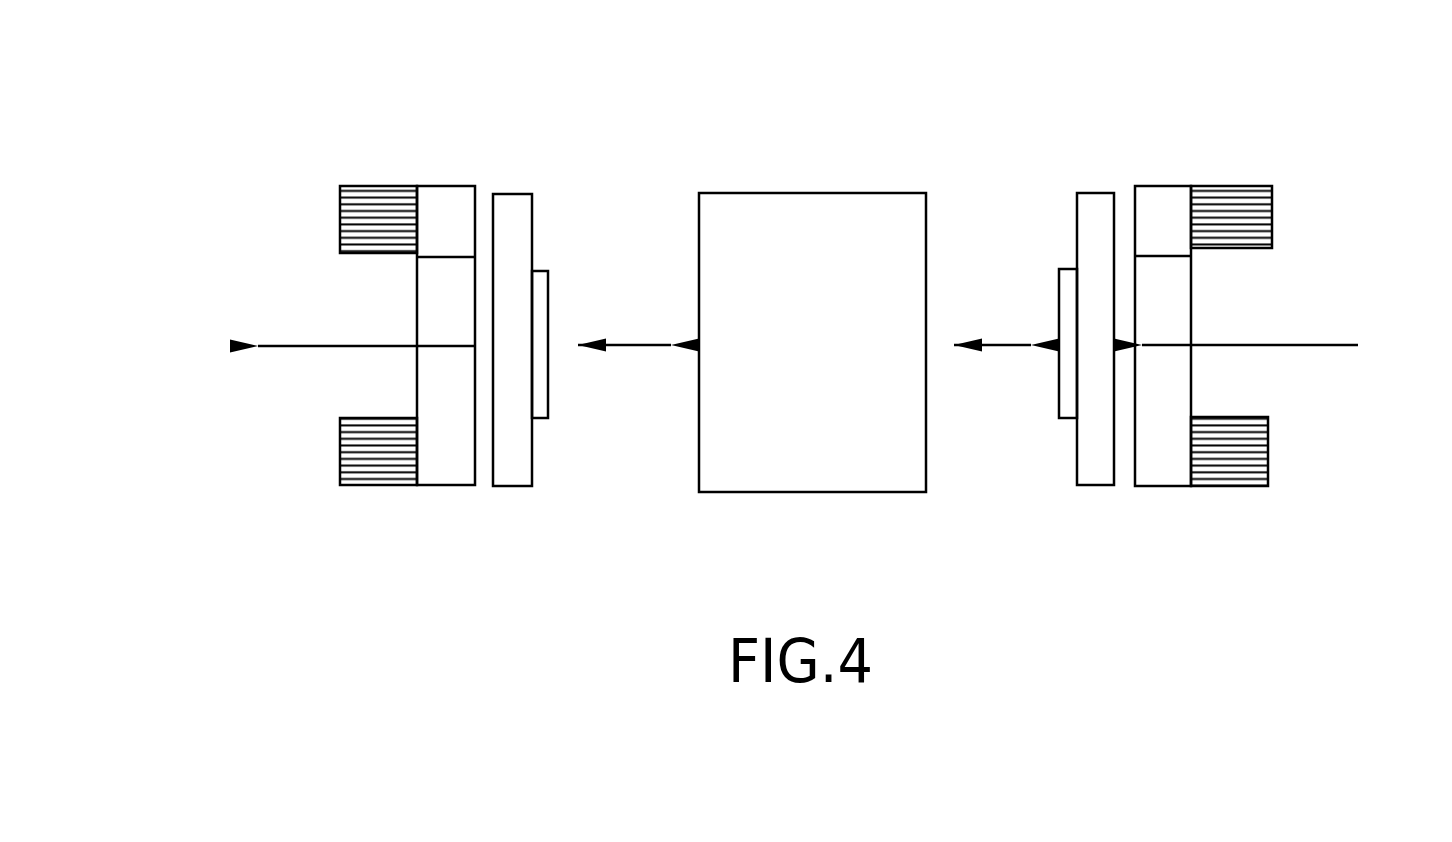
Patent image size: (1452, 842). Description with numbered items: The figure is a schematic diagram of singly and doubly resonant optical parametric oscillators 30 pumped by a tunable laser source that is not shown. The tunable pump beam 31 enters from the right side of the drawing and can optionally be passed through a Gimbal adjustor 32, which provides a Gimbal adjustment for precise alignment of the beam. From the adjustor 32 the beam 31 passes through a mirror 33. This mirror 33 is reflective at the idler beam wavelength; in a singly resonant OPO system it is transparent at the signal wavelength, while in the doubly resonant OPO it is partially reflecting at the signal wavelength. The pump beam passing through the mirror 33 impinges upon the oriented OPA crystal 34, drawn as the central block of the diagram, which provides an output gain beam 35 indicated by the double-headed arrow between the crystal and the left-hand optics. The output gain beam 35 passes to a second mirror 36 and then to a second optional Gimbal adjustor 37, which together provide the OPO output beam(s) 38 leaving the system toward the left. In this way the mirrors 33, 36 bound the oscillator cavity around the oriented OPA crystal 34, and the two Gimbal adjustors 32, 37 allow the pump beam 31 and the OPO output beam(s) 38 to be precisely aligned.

The singly and doubly resonant optical parametric oscillators 30 is at (787, 82).
The tunable pump beam 31 is at (1276, 342).
The Gimbal adjustor 32 is at (1172, 188).
The mirror 33 is at (1097, 192).
The oriented OPA crystal 34 is at (845, 194).
The output gain beam 35 is at (628, 342).
The mirror 36 is at (512, 194).
The second optional Gimbal adjustor 37 is at (444, 186).
The OPO output beam(s) 38 is at (348, 342).